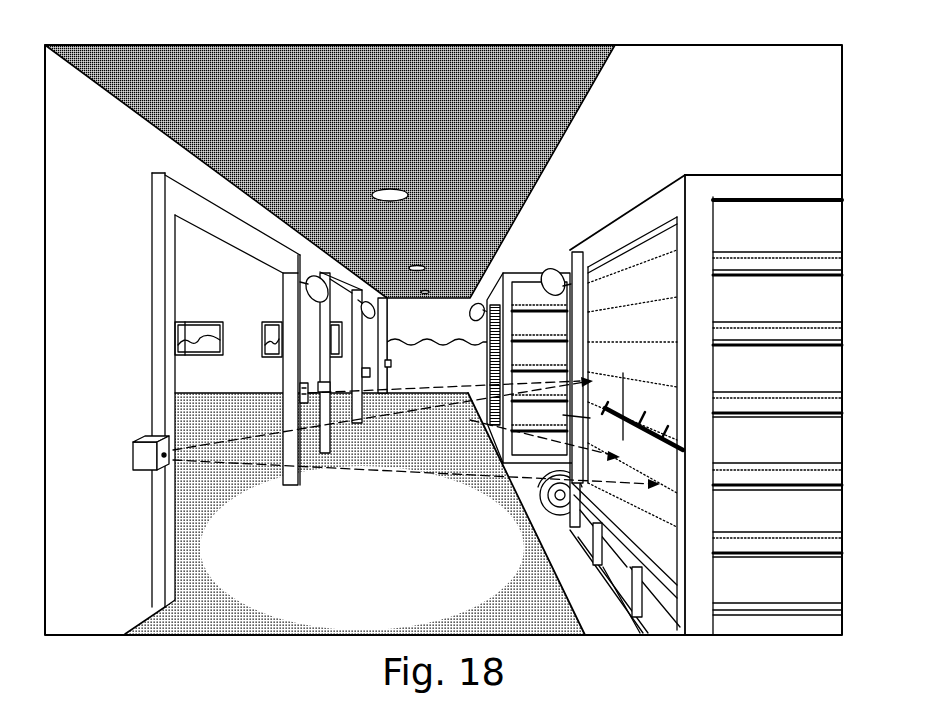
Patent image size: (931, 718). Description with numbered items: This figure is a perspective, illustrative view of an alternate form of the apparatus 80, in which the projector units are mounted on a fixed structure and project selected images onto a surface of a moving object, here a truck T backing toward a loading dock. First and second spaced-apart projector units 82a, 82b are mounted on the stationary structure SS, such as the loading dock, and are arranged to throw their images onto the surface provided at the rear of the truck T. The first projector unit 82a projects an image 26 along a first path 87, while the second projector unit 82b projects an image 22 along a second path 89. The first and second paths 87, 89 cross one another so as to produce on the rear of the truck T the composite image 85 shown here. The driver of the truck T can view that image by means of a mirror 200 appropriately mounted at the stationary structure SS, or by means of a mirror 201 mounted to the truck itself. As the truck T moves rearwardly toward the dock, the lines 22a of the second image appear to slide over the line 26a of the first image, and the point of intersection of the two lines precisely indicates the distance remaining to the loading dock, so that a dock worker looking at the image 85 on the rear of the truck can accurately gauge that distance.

The truck T is at (806, 183).
The stationary structure SS is at (426, 330).
The mirror 200 is at (307, 301).
The mirror 201 is at (553, 269).
The image 26 is at (657, 377).
The line 26a is at (655, 422).
The image 85 is at (655, 366).
The image 22 is at (630, 372).
The lines 22a is at (559, 415).
The first projector unit 82a is at (140, 441).
The second projector unit 82b is at (300, 388).
The second path 89 is at (419, 421).
The first path 87 is at (366, 467).
The apparatus 80 is at (352, 517).